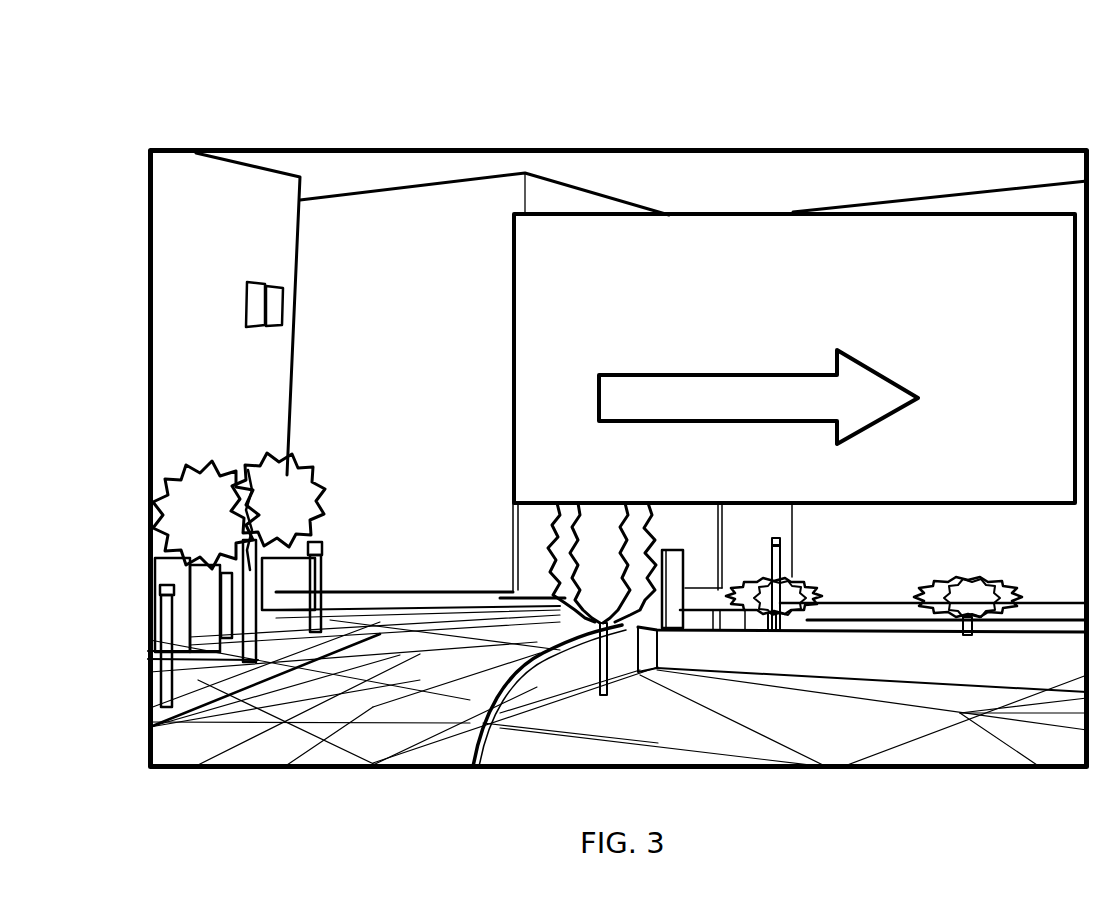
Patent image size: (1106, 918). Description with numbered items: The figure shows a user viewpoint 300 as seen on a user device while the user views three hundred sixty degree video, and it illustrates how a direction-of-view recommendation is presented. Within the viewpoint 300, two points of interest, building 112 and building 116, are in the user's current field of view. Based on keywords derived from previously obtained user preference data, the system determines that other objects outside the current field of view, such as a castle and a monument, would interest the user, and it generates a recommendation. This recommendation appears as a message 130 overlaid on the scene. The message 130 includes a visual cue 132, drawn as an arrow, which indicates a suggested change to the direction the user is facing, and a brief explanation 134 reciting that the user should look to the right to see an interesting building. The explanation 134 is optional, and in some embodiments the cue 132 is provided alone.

The user viewpoint 300 is at (848, 63).
The building 116 is at (238, 227).
The building 112 is at (487, 247).
The message 130 is at (1012, 478).
The visual cue 132 is at (874, 394).
The brief explanation 134 is at (904, 256).